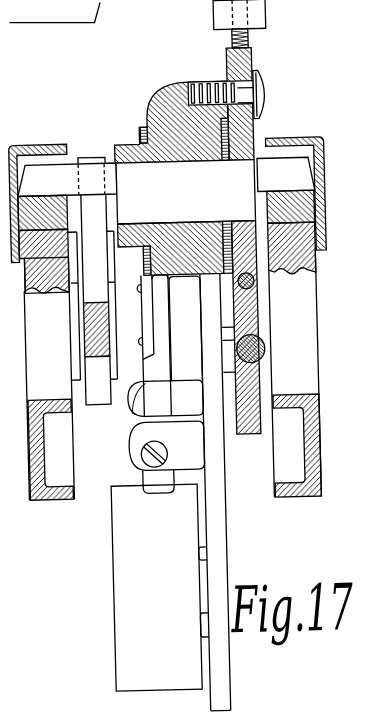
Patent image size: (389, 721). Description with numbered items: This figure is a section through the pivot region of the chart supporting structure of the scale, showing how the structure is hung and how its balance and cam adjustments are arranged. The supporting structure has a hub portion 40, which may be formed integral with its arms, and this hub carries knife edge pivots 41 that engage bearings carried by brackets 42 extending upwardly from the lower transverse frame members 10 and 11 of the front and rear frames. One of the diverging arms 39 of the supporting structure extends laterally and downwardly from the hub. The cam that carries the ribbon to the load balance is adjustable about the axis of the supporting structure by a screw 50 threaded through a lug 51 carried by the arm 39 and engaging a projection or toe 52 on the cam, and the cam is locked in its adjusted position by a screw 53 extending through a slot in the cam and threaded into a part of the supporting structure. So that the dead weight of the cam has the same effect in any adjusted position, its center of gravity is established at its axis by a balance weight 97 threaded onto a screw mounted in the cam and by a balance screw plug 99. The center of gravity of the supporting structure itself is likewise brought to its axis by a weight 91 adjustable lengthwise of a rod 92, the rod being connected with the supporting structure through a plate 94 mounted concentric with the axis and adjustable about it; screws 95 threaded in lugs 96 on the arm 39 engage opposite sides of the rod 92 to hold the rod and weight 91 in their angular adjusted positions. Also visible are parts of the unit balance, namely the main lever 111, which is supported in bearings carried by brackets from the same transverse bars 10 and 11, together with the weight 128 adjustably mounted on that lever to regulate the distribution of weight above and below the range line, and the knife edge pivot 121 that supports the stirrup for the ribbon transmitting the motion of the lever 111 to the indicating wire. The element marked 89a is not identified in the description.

The balance weight 97 is at (277, 15).
The screw 53 is at (276, 107).
The bearing block 89a is at (229, 137).
The knife edge pivots 41 is at (168, 200).
The hub portion 40 is at (185, 192).
The balance screw plug 99 is at (261, 292).
The brackets 42 is at (170, 346).
The lug 51 is at (268, 355).
The screw 50 is at (253, 373).
The plate 94 is at (146, 275).
The knife edge pivot 121 is at (46, 268).
The main lever 111 is at (112, 316).
The rod 92 is at (161, 371).
The weight 128 is at (81, 365).
The lugs 96 is at (166, 399).
The screws 95 is at (159, 457).
The toe 52 is at (247, 342).
The lower transverse member 10 is at (66, 480).
The lower transverse member 11 is at (314, 458).
The weight 91 is at (156, 587).
The arm 39 is at (211, 538).